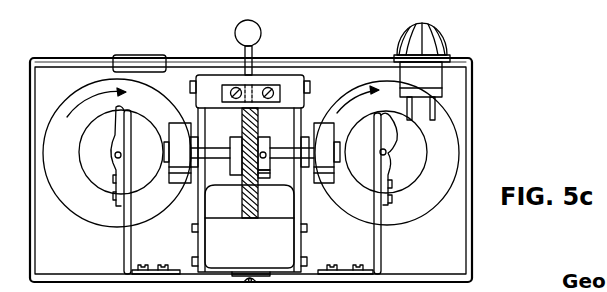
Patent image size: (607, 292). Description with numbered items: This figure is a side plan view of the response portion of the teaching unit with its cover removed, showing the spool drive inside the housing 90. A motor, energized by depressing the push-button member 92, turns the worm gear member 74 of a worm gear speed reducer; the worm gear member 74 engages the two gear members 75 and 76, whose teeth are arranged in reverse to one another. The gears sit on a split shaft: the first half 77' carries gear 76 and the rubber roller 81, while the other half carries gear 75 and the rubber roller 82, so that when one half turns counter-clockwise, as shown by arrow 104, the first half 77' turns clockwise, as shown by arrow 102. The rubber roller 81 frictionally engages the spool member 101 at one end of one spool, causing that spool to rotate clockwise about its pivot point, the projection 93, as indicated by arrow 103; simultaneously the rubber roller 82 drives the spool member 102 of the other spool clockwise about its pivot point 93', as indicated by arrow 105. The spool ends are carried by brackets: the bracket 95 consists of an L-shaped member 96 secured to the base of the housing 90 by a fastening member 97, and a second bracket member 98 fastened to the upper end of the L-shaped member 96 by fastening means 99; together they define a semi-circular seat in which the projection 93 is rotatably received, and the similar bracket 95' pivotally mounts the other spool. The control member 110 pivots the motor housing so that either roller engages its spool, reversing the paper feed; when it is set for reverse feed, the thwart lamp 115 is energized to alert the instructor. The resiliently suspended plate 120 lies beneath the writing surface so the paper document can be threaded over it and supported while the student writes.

The worm gear member 74 is at (246, 201).
The gear member 75 is at (238, 174).
The gear member 76 is at (266, 138).
The first half of split shaft 77' is at (237, 183).
The rubber roller 81 is at (327, 182).
The rubber roller 82 is at (175, 123).
The housing 90 is at (470, 146).
The push-button member 92 is at (145, 61).
The projection 93 is at (366, 154).
The pivot point 93' is at (121, 152).
The bracket 95 is at (412, 262).
The bracket 95' is at (104, 190).
The L-shaped member 96 is at (381, 240).
The fastening member 97 is at (353, 263).
The second bracket member 98 is at (392, 129).
The fastening means 99 is at (392, 184).
The spool member 101 is at (426, 198).
The spool member 102 is at (87, 208).
The arrow 103 is at (352, 95).
The arrow 104 is at (229, 128).
The arrow 105 is at (92, 97).
The control member 110 is at (257, 42).
The thwart lamp 115 is at (437, 46).
The resiliently suspended plate 120 is at (65, 66).